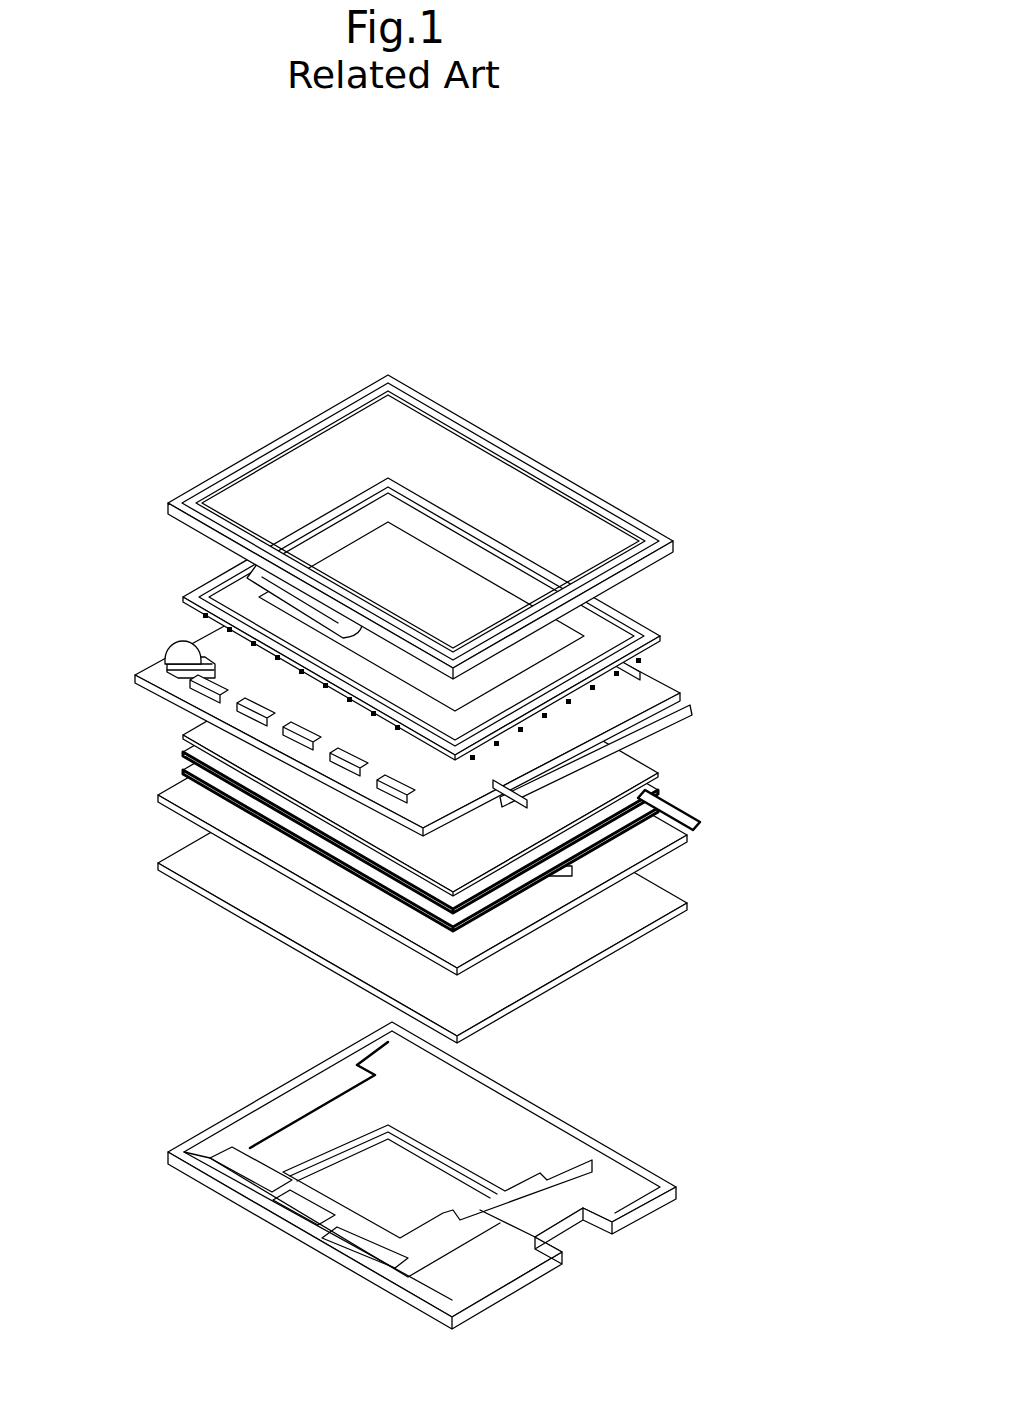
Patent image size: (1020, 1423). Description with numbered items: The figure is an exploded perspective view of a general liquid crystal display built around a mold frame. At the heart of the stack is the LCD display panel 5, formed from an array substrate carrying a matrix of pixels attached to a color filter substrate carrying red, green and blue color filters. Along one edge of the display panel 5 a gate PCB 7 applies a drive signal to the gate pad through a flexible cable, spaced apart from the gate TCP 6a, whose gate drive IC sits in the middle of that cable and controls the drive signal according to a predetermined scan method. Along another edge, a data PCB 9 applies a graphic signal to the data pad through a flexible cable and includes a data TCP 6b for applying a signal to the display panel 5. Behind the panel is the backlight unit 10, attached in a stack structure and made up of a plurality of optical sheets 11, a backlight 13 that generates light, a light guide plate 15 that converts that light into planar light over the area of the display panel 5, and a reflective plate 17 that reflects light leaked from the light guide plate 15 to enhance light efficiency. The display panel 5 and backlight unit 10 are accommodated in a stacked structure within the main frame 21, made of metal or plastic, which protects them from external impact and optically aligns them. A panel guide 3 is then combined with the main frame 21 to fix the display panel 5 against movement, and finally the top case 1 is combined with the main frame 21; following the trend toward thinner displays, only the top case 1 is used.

The top case 1 is at (642, 523).
The panel guide 3 is at (663, 627).
The LCD display panel 5 is at (655, 685).
The gate TCP 6a is at (688, 705).
The data TCP 6b is at (205, 672).
The gate PCB 7 is at (685, 713).
The data PCB 9 is at (150, 672).
The backlight unit 10 is at (423, 829).
The optical sheets 11 is at (122, 870).
The backlight 13 is at (700, 823).
The light guide plate 15 is at (657, 837).
The reflective plate 17 is at (645, 907).
The main frame 21 is at (642, 1190).